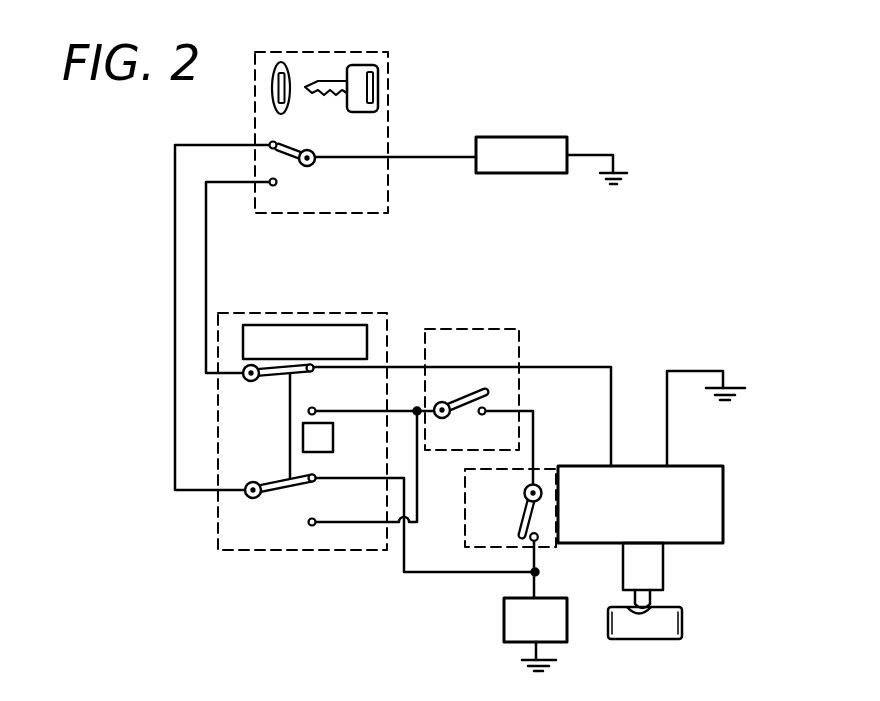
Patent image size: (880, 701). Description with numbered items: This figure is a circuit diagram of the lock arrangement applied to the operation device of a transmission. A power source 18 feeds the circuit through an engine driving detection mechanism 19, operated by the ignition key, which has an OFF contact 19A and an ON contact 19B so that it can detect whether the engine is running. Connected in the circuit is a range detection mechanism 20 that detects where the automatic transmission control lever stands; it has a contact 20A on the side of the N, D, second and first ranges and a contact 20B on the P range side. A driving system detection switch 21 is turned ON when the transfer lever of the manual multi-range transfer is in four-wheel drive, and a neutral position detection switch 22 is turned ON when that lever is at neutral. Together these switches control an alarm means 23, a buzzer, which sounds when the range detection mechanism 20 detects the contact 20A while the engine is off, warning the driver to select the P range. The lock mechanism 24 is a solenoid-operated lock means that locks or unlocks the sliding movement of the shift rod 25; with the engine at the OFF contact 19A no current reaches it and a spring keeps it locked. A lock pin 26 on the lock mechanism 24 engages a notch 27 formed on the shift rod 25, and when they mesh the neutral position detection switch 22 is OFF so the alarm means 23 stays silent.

The power source 18 is at (527, 137).
The engine driving detection mechanism 19 is at (388, 125).
The OFF contact 19A is at (276, 143).
The ON contact 19B is at (276, 186).
The range detection mechanism 20 is at (334, 313).
The contact on the side of the N, D, 2nd and 1st ranges 20A is at (315, 371).
The contact on the P range side 20B is at (315, 415).
The driving system detection switch 21 is at (478, 329).
The neutral position detection switch 22 is at (548, 468).
The alarm means 23 is at (504, 631).
The lock mechanism 24 is at (725, 498).
The shift rod 25 is at (666, 620).
The lock pin 26 is at (651, 598).
The notch 27 is at (630, 607).